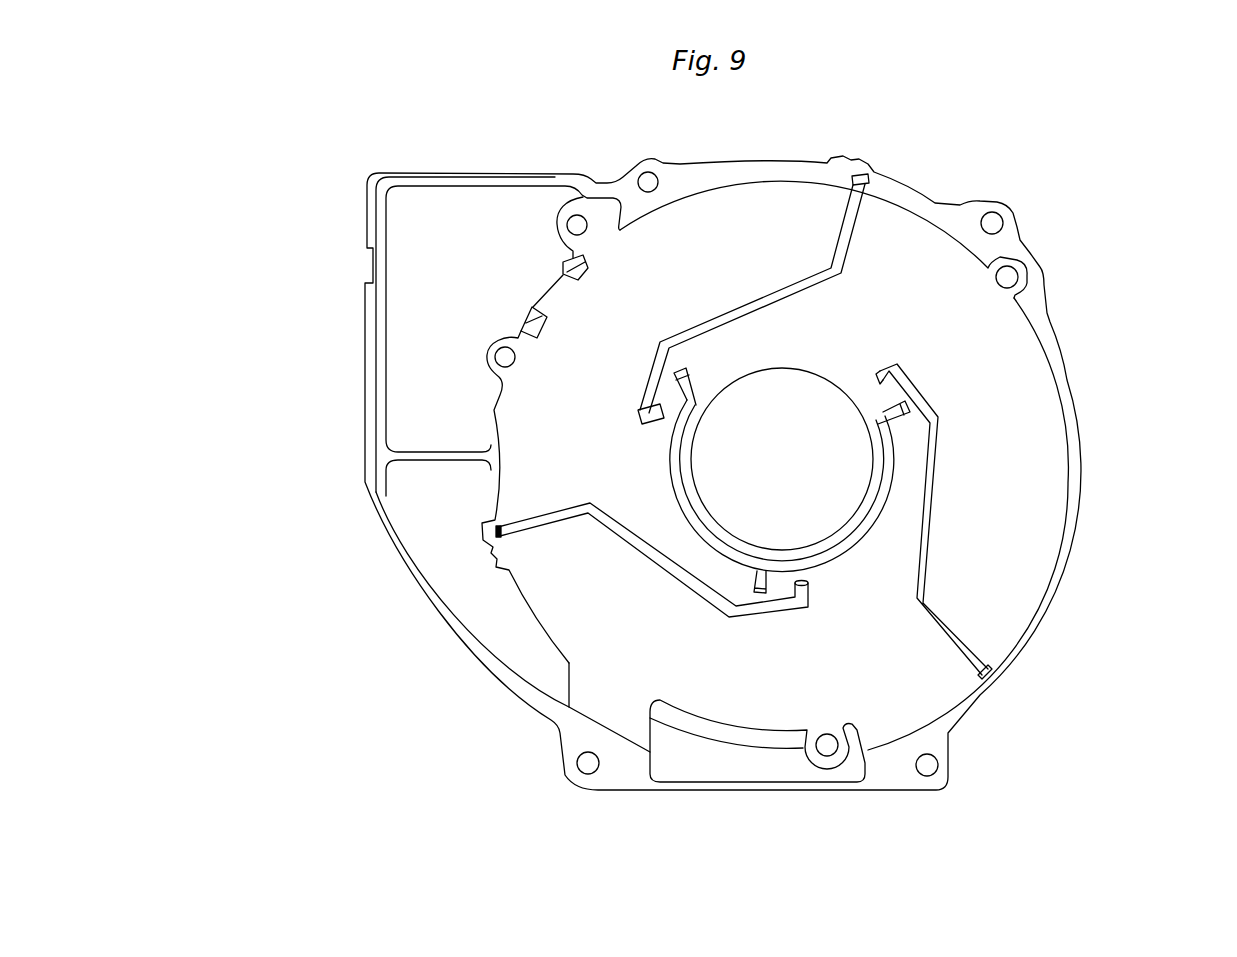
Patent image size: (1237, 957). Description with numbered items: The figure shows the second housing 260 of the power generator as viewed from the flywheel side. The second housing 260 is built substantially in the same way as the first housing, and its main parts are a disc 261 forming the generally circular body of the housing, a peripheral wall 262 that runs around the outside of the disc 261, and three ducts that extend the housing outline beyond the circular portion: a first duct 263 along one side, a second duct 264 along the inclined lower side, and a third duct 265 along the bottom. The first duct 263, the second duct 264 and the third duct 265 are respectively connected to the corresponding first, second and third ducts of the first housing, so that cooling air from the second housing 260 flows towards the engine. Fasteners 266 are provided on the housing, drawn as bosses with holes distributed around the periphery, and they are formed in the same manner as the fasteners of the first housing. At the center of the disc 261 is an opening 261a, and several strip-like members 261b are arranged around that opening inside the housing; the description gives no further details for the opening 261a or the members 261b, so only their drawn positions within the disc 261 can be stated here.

The second housing 260 is at (318, 177).
The disc 261 is at (1008, 413).
The central opening 261a is at (816, 462).
The leaf springs / retaining members 261b is at (788, 607).
The peripheral wall 262 is at (1080, 483).
The first duct 263 is at (367, 325).
The second duct 264 is at (415, 577).
The third duct 265 is at (715, 783).
The fasteners 266 is at (663, 165).